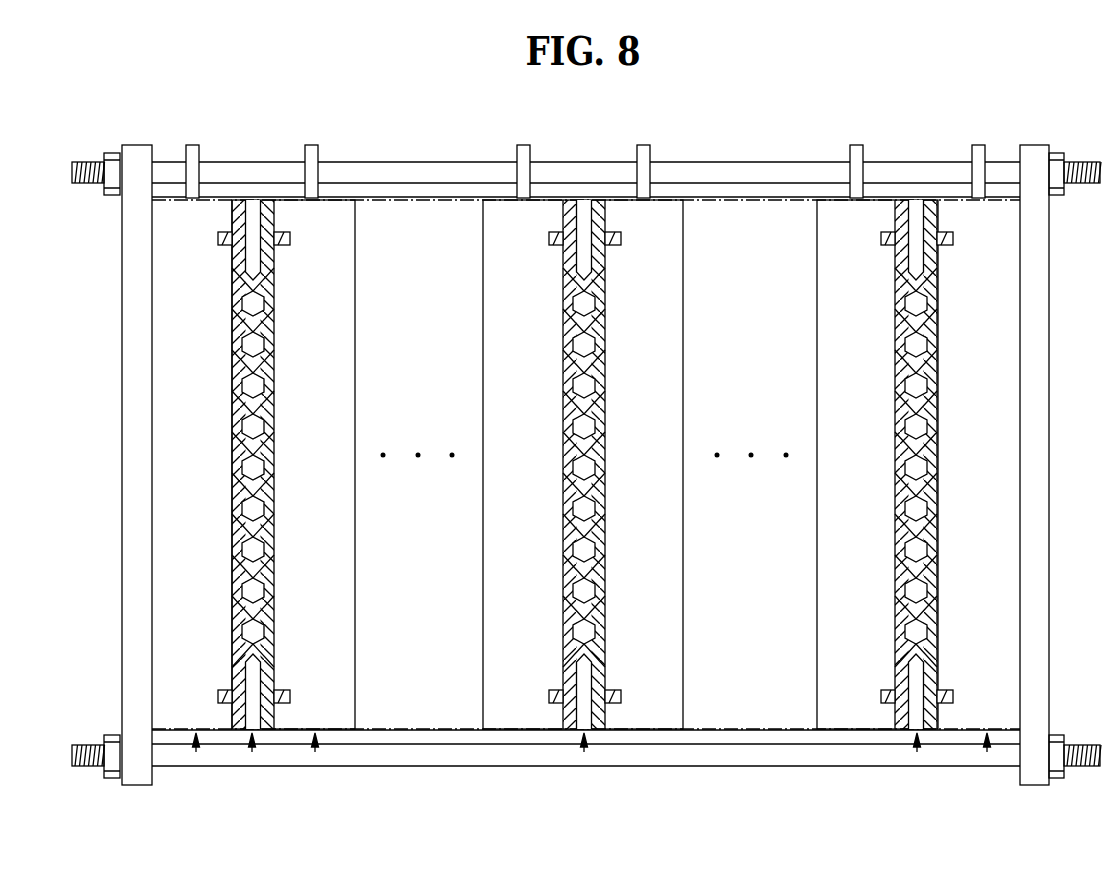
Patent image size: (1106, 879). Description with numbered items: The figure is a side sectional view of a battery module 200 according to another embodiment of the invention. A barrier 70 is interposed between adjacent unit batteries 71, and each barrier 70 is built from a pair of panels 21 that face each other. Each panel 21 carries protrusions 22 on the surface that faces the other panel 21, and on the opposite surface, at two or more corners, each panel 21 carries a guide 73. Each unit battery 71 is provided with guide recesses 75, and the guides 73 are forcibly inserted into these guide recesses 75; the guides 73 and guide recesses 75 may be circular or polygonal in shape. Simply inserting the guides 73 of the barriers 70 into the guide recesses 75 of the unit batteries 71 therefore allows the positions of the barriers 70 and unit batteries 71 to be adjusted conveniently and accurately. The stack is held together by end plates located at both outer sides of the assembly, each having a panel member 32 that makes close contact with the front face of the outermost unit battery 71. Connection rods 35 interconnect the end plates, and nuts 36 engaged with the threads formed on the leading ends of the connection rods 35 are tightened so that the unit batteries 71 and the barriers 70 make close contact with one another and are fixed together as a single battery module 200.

The battery module 200 is at (571, 115).
The panel 21 is at (244, 427).
The protrusion 22 is at (248, 406).
The panel member 32 is at (124, 312).
The connection rod 35 is at (449, 162).
The nut 36 is at (112, 153).
The barrier 70 is at (252, 752).
The unit battery 71 is at (196, 752).
The guide 73 is at (222, 233).
The guide recess 75 is at (218, 239).